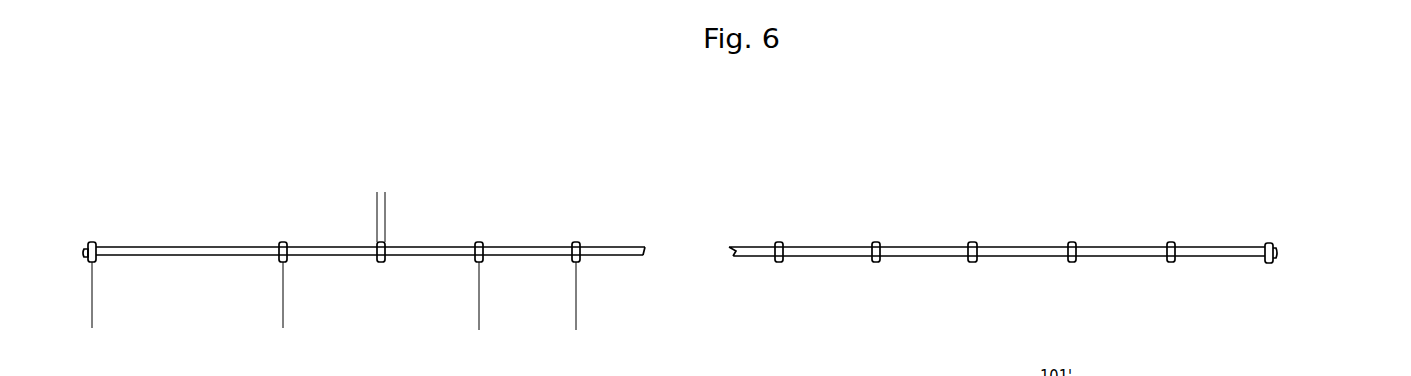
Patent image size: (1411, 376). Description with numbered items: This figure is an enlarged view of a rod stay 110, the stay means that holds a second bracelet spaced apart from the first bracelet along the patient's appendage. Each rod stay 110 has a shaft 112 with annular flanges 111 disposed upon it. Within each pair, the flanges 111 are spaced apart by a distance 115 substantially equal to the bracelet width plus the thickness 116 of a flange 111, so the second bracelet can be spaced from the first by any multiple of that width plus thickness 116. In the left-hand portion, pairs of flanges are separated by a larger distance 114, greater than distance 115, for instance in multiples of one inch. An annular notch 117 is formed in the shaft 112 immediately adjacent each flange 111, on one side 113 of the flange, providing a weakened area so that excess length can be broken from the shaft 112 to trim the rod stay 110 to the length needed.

The rod stay 110 is at (618, 193).
The flange 111 is at (1279, 259).
The shaft 112 is at (1197, 247).
The side 113 is at (1177, 260).
The distance 114 is at (282, 304).
The distance 115 is at (625, 304).
The thickness 116 is at (415, 213).
The annular notch 117 is at (976, 246).